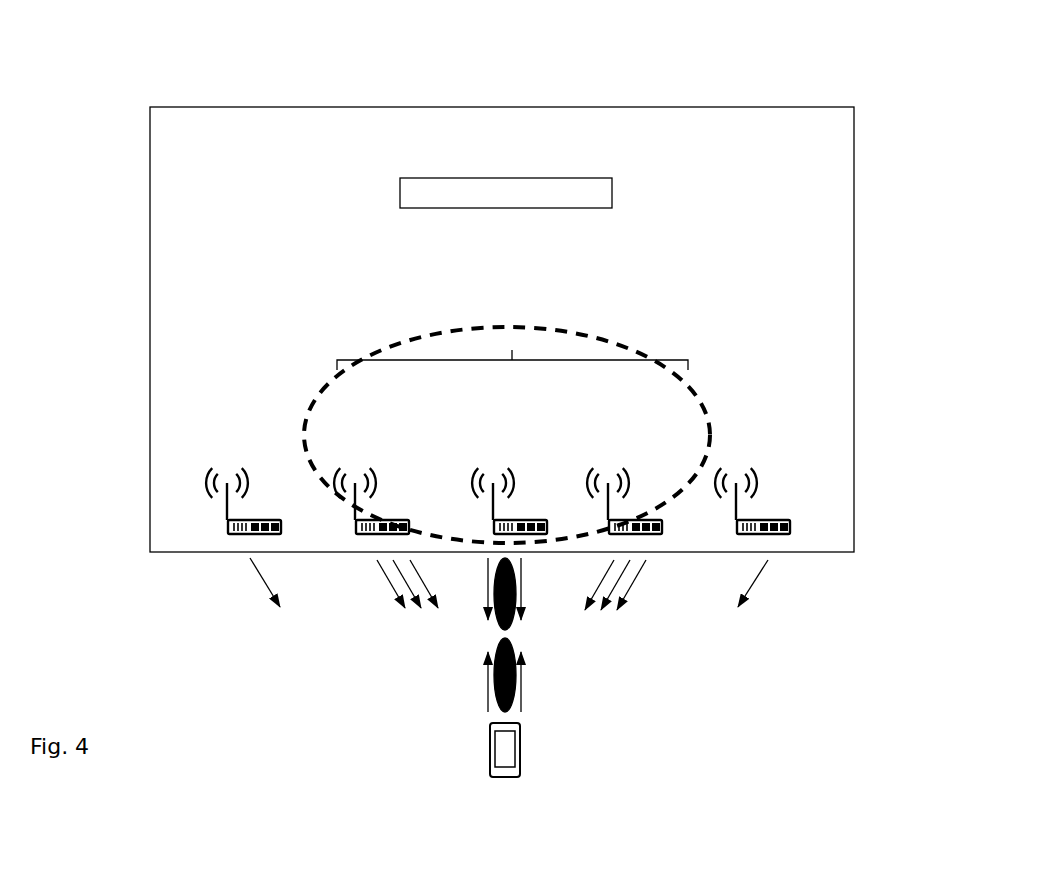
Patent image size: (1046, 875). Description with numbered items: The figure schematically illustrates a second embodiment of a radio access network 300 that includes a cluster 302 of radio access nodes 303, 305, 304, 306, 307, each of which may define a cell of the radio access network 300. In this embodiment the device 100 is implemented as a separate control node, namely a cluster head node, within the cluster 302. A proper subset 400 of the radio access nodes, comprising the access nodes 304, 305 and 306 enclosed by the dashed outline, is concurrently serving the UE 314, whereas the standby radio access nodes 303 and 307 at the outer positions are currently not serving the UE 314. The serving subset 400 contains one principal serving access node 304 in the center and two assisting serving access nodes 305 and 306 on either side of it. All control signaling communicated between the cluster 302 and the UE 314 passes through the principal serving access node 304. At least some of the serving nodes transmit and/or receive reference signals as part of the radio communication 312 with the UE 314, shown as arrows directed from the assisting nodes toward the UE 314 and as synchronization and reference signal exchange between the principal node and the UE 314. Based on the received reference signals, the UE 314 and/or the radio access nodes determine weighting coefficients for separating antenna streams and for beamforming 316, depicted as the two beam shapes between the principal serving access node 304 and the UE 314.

The radio access network 300 is at (158, 46).
The cluster 302 is at (795, 107).
The device 100 is at (612, 185).
The proper subset 400 is at (603, 340).
The radio access node 303 is at (217, 530).
The assisting serving access node 305 is at (343, 523).
The principal serving access node 304 is at (455, 540).
The assisting serving access node 306 is at (660, 540).
The radio access node 307 is at (805, 526).
The radio communication 312 is at (527, 657).
The beamforming 316 is at (500, 628).
The UE 314 is at (527, 750).